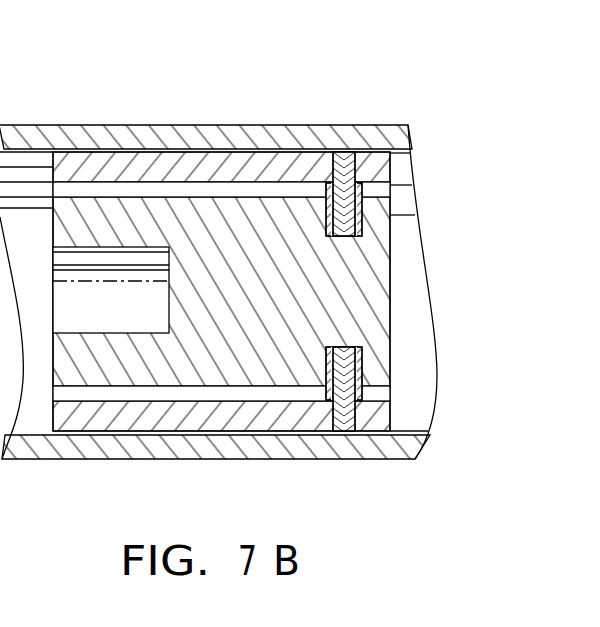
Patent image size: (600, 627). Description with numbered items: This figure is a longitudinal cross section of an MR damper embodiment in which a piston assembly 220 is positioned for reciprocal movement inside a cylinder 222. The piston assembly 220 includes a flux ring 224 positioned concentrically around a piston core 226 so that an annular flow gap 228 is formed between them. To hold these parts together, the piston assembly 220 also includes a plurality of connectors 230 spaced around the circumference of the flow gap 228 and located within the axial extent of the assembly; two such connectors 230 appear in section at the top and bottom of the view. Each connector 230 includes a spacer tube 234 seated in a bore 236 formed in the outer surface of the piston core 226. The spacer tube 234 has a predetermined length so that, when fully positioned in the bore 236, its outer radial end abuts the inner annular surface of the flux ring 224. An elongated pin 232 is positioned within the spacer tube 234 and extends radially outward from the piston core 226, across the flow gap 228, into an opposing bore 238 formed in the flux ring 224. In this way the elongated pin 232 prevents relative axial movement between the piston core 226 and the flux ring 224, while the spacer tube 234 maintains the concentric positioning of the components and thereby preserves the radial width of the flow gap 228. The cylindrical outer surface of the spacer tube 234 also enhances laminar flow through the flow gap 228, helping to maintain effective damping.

The piston assembly 220 is at (214, 147).
The cylinder 222 is at (133, 128).
The flux ring 224 is at (83, 160).
The piston core 226 is at (148, 380).
The flow gap 228 is at (236, 390).
The connector 230 is at (368, 292).
The elongated pin 232 is at (347, 163).
The spacer tube 234 is at (360, 200).
The bore 236 is at (362, 215).
The opposing bore 238 is at (333, 160).